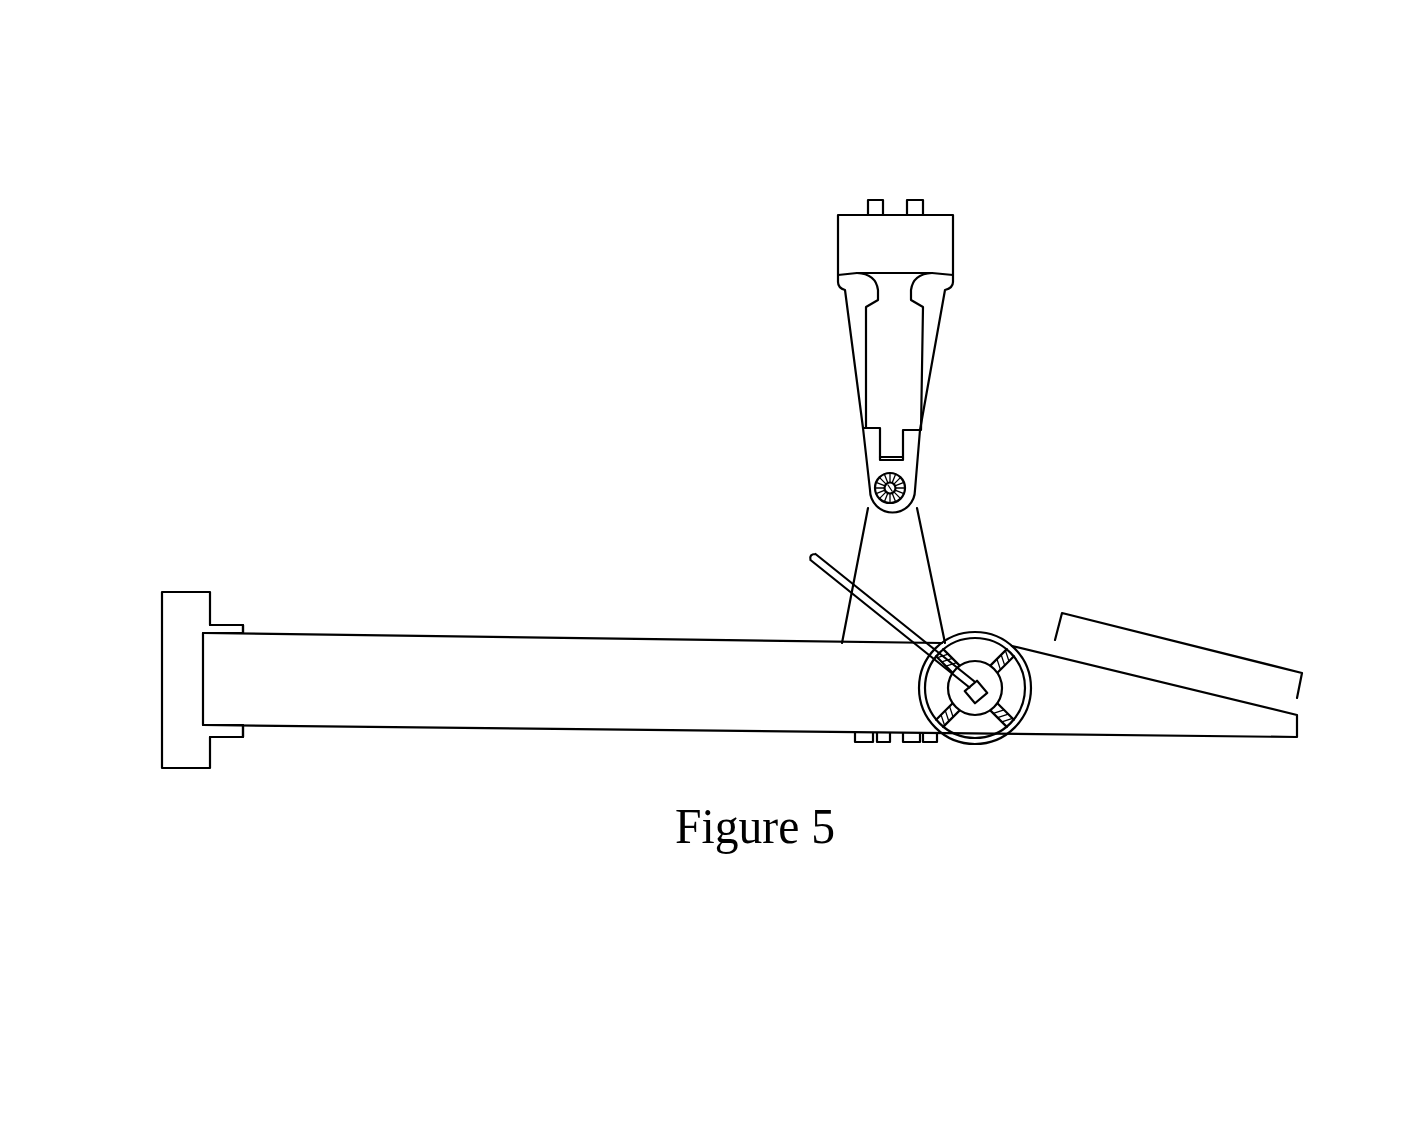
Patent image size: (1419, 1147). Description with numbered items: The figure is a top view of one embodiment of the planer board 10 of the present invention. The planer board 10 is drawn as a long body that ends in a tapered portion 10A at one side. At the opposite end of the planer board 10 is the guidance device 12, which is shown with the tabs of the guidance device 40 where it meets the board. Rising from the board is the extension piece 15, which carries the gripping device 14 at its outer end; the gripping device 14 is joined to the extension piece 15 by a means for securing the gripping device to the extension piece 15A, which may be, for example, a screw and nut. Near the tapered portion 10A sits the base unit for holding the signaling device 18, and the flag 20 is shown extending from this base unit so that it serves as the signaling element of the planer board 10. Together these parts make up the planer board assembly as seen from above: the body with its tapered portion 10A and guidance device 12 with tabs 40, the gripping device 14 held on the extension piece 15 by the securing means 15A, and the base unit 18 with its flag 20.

The planer board 10 is at (1280, 723).
The tapered portion 10A is at (1183, 640).
The guidance device 12 is at (190, 592).
The gripping device 14 is at (1025, 223).
The extension piece 15 is at (900, 577).
The means for securing the gripping device to the extension piece 15A is at (876, 487).
The base unit for holding the signaling device 18 is at (992, 745).
The flag 20 is at (820, 570).
The tabs of the guidance device 40 is at (223, 733).